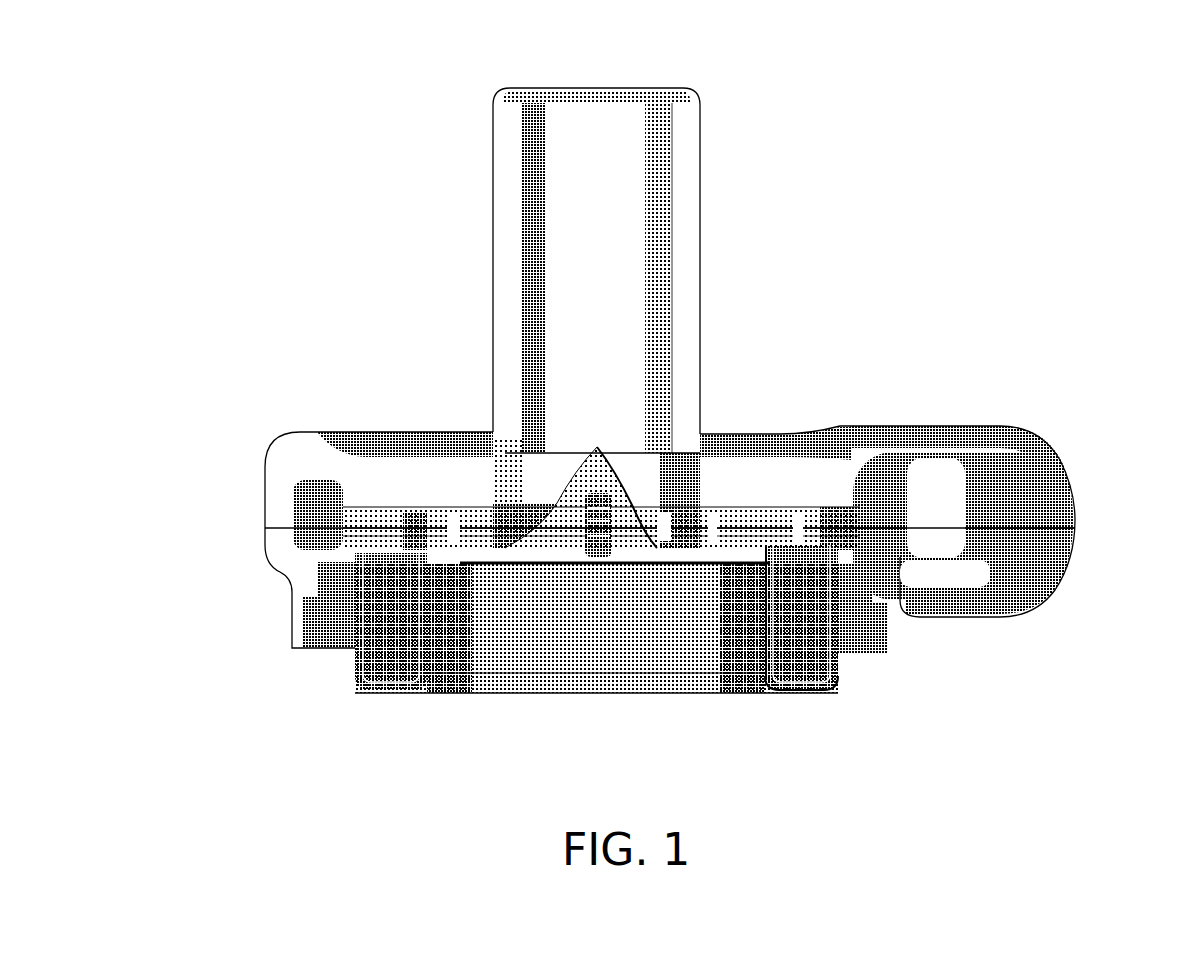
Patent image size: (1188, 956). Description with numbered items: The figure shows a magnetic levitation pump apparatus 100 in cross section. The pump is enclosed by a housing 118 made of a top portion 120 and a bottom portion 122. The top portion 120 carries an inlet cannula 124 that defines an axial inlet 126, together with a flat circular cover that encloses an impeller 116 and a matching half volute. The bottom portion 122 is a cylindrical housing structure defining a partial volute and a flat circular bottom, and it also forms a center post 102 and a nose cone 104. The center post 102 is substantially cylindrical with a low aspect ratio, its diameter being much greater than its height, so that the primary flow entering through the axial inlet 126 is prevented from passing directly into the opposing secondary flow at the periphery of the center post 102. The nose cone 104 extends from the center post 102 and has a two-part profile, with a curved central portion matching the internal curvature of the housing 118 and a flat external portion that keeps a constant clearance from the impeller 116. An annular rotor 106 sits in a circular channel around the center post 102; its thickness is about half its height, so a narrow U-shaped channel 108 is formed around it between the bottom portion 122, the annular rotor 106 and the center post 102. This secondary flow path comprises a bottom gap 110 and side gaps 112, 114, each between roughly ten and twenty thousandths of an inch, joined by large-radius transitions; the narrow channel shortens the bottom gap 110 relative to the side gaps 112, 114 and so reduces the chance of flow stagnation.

The pump apparatus 100 is at (1017, 176).
The center post 102 is at (568, 650).
The nose cone 104 is at (640, 513).
The annular rotor 106 is at (377, 585).
The U-shaped channel 108 is at (828, 695).
The bottom gap 110 is at (784, 704).
The side gap 112 is at (757, 640).
The side gap 114 is at (854, 643).
The impeller 116 is at (752, 511).
The housing 118 is at (719, 162).
The top portion 120 is at (410, 418).
The bottom portion 122 is at (273, 601).
The inlet cannula 124 is at (502, 159).
The axial inlet 126 is at (614, 132).